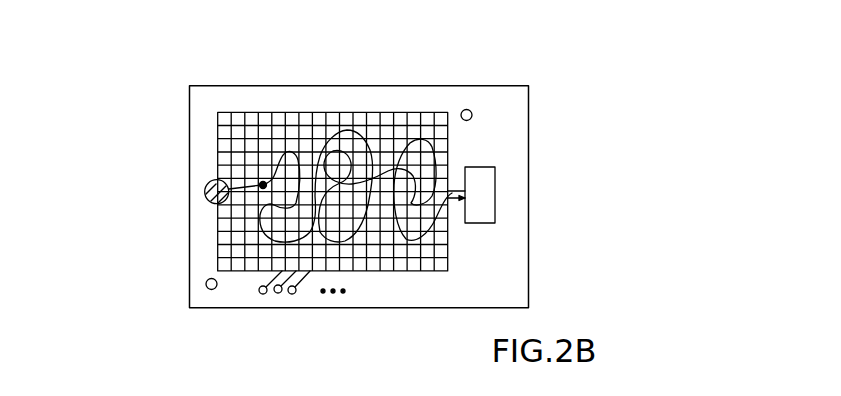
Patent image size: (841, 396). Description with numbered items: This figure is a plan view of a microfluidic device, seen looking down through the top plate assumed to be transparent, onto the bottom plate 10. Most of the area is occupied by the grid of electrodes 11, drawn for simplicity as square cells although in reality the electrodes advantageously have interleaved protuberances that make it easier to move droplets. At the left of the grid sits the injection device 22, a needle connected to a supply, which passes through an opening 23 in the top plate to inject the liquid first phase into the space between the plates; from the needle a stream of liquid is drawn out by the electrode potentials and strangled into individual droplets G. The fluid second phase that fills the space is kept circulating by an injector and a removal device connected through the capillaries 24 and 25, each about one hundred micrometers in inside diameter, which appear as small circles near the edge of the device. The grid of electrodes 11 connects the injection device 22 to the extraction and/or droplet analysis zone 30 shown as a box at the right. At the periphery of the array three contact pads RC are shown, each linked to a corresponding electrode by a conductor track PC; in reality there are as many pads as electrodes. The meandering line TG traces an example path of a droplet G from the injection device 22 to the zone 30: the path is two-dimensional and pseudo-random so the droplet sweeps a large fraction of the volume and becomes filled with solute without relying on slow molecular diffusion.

The bottom plate 10 is at (190, 308).
The grid of electrodes 11 is at (373, 272).
The injection device 22 is at (205, 193).
The opening 23 is at (209, 206).
The capillary 24 is at (465, 109).
The capillary 25 is at (206, 284).
The extraction and/or droplet analysis zone 30 is at (495, 166).
The droplet G is at (263, 182).
The path of a droplet TG is at (342, 132).
The conductor track PC is at (258, 283).
The contact pad RC is at (258, 292).